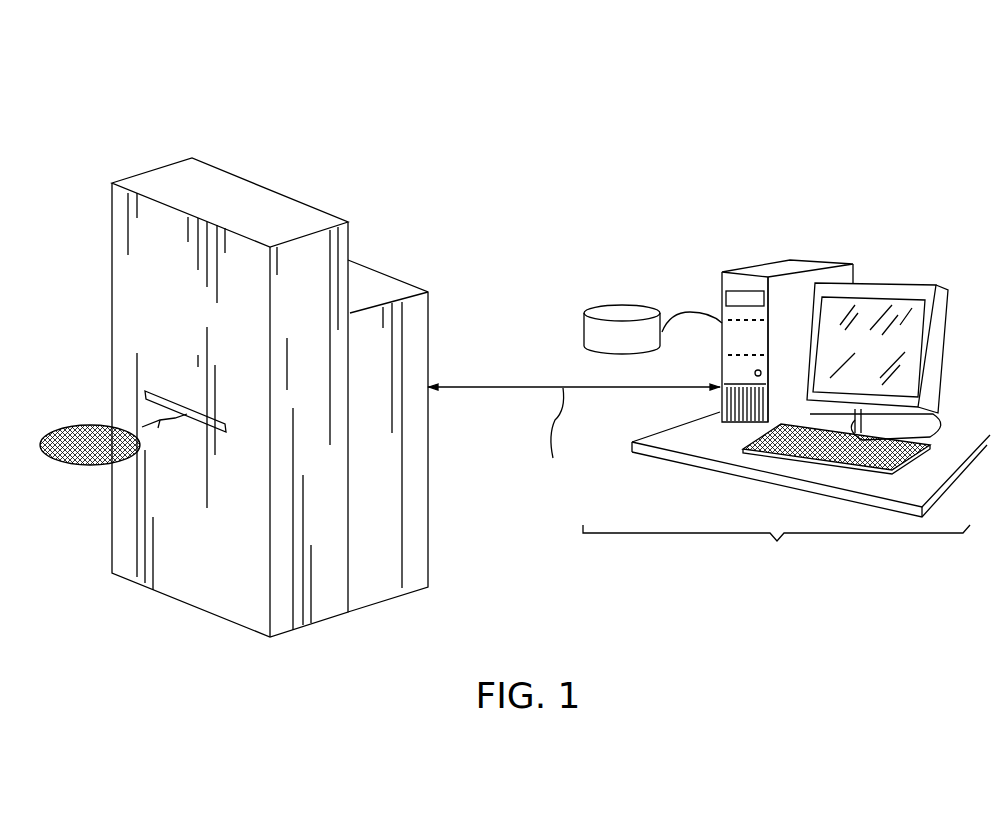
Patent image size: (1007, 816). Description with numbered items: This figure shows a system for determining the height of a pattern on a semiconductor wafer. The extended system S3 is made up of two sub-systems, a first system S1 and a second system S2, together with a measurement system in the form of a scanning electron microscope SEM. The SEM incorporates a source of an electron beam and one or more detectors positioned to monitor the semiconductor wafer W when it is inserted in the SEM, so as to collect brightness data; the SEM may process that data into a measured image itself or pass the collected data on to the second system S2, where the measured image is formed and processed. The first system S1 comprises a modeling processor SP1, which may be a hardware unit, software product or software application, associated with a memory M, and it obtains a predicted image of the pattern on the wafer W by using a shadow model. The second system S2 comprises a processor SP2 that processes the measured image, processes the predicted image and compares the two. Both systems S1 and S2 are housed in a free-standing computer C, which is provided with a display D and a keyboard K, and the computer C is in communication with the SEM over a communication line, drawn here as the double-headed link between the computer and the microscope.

The scanning electron microscope SEM is at (150, 168).
The semiconductor wafer W is at (56, 425).
The extended system S3 is at (494, 197).
The memory M is at (622, 304).
The computer C is at (770, 263).
The modeling processor SP1 is at (781, 298).
The processor SP2 is at (795, 334).
The display D is at (883, 285).
The keyboard K is at (930, 445).
The first system S1 is at (776, 547).
The second system S2 is at (776, 547).